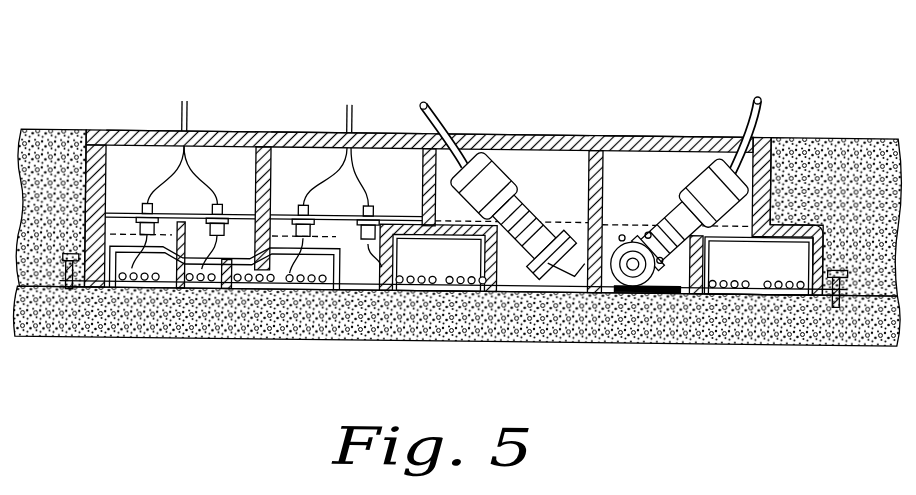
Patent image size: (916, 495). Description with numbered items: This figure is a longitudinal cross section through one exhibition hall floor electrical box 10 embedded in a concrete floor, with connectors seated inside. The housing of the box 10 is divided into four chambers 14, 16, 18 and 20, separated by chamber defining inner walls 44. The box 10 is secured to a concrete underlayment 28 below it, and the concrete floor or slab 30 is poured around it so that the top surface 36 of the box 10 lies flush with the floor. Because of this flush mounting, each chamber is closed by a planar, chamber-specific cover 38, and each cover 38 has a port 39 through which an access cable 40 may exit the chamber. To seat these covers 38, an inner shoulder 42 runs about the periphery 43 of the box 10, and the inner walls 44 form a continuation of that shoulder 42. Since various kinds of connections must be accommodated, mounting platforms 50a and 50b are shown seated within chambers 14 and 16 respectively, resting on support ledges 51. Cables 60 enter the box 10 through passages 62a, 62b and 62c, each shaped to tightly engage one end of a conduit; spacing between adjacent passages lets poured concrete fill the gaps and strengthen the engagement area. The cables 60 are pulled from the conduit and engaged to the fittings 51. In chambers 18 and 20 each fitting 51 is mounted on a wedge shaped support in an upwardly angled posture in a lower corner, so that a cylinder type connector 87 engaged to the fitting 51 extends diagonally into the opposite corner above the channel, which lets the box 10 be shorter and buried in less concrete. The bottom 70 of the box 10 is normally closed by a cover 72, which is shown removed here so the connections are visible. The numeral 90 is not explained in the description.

The exhibition hall floor electrical box 10 is at (454, 209).
The first chamber 14 is at (242, 176).
The second chamber 16 is at (405, 181).
The third chamber 18 is at (575, 180).
The fourth chamber 20 is at (642, 179).
The concrete underlayment 28 is at (692, 298).
The concrete floor or slab 30 is at (850, 146).
The top surface 36 is at (549, 135).
The covers 38 is at (225, 135).
The port 39 is at (182, 134).
The access cable 40 is at (185, 134).
The inner shoulder 42 is at (101, 135).
The periphery 43 is at (767, 135).
The chamber defining inner walls 44 is at (596, 137).
The mounting platform 50a is at (112, 212).
The mounting platform 50b is at (281, 185).
The support ledges / fittings 51 is at (556, 230).
The cables 60 is at (314, 291).
The passage 62a is at (281, 265).
The passage 62b is at (451, 266).
The passage 62c is at (776, 262).
The bottom 70 is at (627, 285).
The cover 72 is at (540, 291).
The cylinder type connector 87 is at (670, 218).
The anchor bracket 90 is at (838, 300).